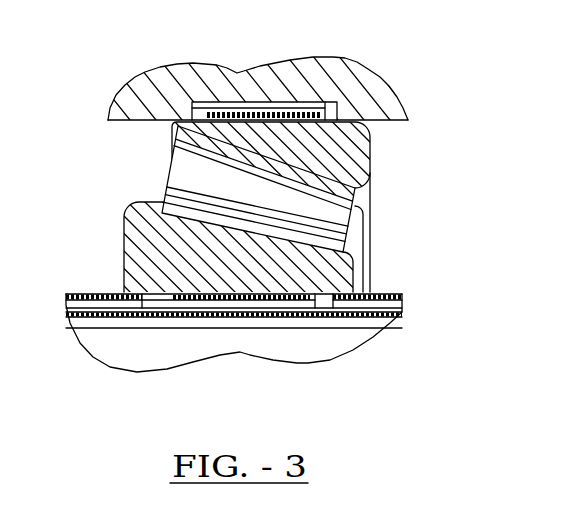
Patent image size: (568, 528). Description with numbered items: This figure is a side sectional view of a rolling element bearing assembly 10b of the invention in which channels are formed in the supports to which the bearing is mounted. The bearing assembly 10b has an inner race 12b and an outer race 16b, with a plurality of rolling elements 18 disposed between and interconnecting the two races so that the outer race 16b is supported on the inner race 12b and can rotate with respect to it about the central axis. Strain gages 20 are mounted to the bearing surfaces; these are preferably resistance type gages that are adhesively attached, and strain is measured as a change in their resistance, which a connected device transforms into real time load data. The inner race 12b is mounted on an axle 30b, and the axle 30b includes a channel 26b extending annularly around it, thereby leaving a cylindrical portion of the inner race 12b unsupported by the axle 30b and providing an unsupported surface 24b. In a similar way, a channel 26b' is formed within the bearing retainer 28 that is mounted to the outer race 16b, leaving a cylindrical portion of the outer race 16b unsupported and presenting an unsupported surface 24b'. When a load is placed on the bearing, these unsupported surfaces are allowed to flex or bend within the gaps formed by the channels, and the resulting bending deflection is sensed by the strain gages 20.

The bearing assembly 10b is at (269, 227).
The inner race 12b is at (327, 275).
The outer race 16b is at (350, 150).
The rolling elements 18 is at (318, 210).
The strain gages 20 is at (254, 114).
The unsupported surface 24b is at (228, 348).
The unsupported surface 24b' is at (212, 135).
The channel 26b is at (182, 345).
The channel 26b' is at (382, 72).
The bearing retainer 28 is at (380, 110).
The axle 30b is at (357, 342).